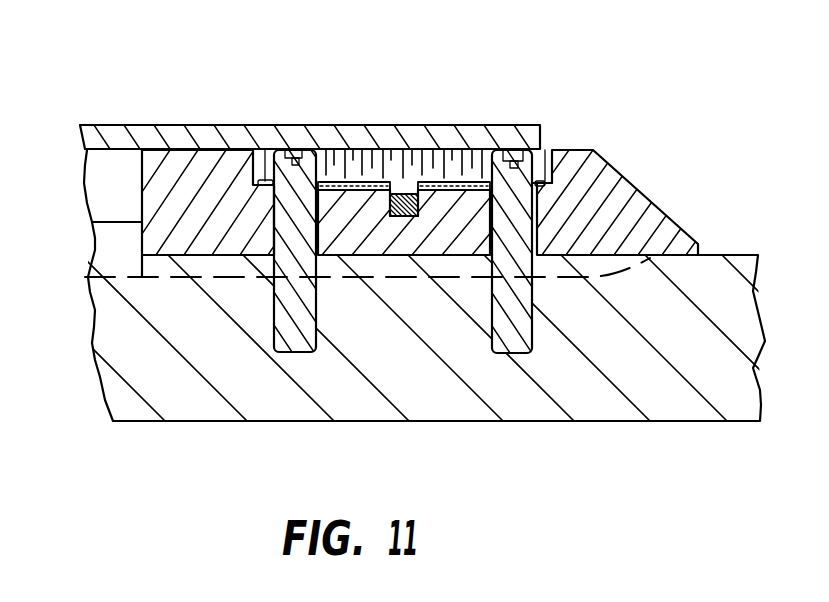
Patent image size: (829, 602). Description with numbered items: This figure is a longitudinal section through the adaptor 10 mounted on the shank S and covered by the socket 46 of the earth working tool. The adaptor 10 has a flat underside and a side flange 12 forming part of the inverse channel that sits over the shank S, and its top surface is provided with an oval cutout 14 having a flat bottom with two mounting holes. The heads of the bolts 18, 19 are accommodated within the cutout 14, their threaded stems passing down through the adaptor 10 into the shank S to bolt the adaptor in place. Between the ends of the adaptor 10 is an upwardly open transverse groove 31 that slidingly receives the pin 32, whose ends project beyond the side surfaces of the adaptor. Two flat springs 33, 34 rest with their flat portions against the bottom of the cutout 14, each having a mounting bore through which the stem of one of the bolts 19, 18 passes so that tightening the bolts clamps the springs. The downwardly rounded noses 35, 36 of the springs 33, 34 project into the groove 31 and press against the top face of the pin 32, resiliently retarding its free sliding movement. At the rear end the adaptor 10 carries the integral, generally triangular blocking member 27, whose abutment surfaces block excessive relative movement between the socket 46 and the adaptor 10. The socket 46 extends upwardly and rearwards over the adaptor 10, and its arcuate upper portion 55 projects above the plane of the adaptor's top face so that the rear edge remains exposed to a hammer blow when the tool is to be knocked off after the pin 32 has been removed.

The shank S is at (180, 397).
The adaptor 10 is at (177, 160).
The side flange 12 is at (140, 267).
The oval cutout 14 is at (473, 181).
The bolt 18 is at (512, 354).
The bolt 19 is at (297, 356).
The blocking member 27 is at (637, 190).
The transverse groove 31 is at (408, 183).
The pin 32 is at (405, 214).
The flat spring 33 is at (377, 183).
The flat spring 34 is at (433, 183).
The nose 35 is at (383, 195).
The nose 36 is at (416, 192).
The socket 46 is at (237, 115).
The arcuate upper portion 55 is at (541, 148).